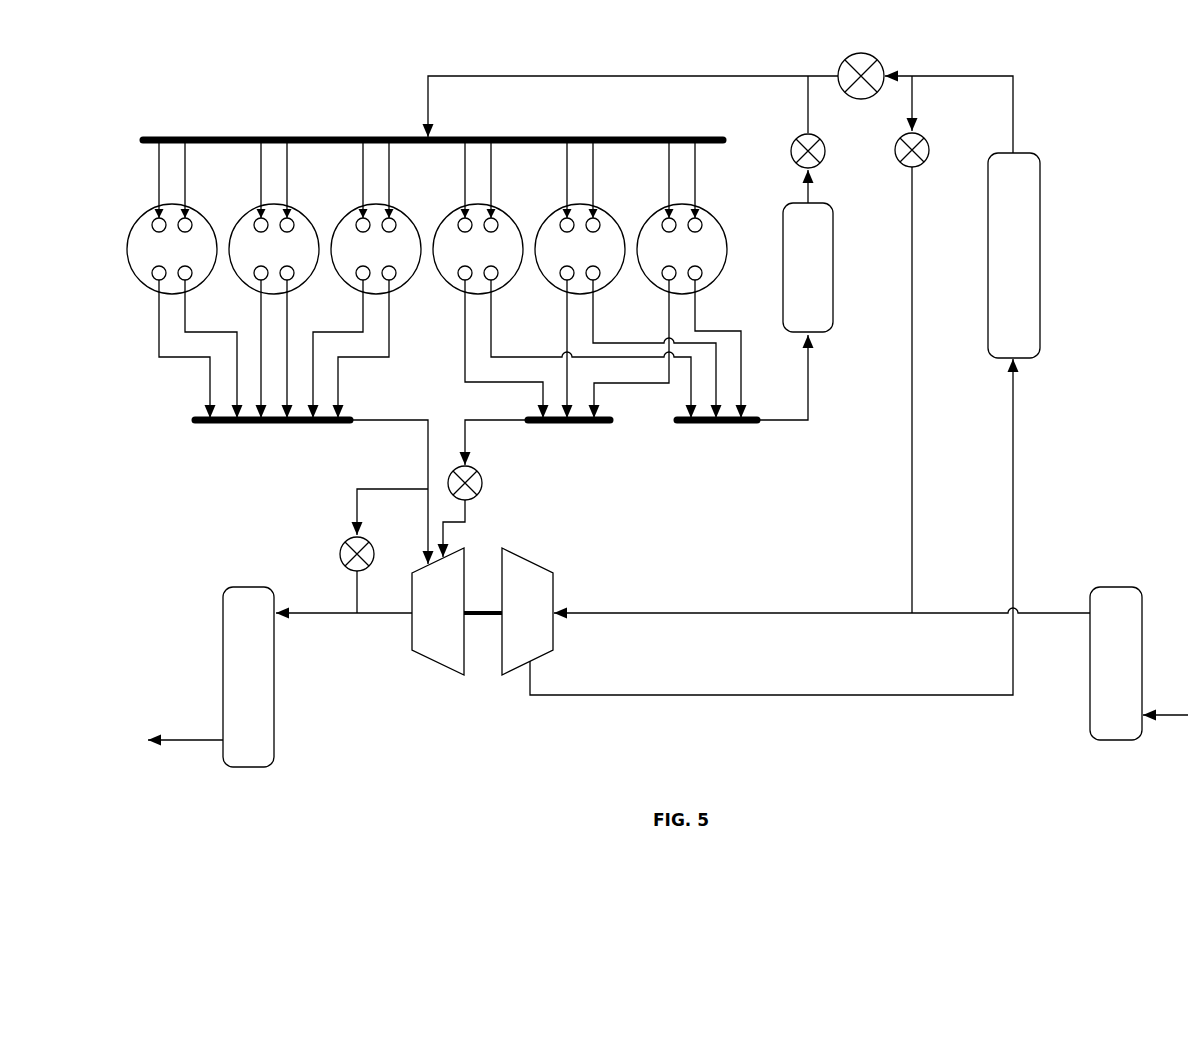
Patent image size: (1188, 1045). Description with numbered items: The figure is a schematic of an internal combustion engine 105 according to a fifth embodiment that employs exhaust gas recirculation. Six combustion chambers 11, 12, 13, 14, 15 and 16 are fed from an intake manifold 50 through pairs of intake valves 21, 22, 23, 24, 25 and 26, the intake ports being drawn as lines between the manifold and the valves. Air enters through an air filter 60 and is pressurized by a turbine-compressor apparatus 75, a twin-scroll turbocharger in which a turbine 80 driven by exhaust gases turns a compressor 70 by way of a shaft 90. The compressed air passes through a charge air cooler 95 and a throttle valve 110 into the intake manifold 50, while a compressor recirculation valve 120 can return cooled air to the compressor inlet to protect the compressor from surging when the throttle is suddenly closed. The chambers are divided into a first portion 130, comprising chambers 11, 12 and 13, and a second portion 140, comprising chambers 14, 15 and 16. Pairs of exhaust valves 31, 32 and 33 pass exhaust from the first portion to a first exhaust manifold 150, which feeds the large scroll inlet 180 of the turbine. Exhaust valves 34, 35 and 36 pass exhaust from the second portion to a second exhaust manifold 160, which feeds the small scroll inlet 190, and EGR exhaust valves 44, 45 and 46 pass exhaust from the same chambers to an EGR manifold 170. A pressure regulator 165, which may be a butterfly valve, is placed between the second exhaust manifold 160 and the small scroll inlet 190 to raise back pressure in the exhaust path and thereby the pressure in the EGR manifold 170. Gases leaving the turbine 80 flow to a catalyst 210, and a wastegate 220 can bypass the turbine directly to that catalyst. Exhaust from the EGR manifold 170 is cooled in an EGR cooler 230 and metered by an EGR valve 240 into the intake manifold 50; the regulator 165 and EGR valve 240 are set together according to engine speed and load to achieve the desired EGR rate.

The engine 105 is at (134, 112).
The intake manifold 50 is at (220, 136).
The combustion chamber 11 is at (162, 259).
The combustion chamber 12 is at (264, 259).
The combustion chamber 13 is at (366, 259).
The combustion chamber 14 is at (468, 259).
The combustion chamber 15 is at (570, 259).
The combustion chamber 16 is at (672, 259).
The intake valves 21 is at (180, 214).
The intake valves 22 is at (282, 214).
The intake valves 23 is at (384, 214).
The intake valves 24 is at (486, 214).
The intake valves 25 is at (588, 214).
The intake valves 26 is at (690, 214).
The exhaust valves 31 is at (164, 286).
The exhaust valves 32 is at (266, 286).
The exhaust valves 33 is at (368, 286).
The exhaust valve 34 is at (458, 279).
The EGR exhaust valve 44 is at (498, 279).
The exhaust valve 35 is at (560, 279).
The EGR exhaust valve 45 is at (600, 279).
The exhaust valve 36 is at (662, 279).
The EGR exhaust valve 46 is at (702, 279).
The first portion 130 is at (402, 356).
The second portion 140 is at (454, 332).
The first exhaust manifold 150 is at (228, 426).
The second exhaust manifold 160 is at (586, 426).
The EGR manifold 170 is at (706, 428).
The pressure regulator 165 is at (484, 483).
The large scroll inlet 180 is at (426, 560).
The small scroll inlet 190 is at (459, 562).
The wastegate 220 is at (339, 546).
The turbine 80 is at (428, 623).
The compressor 70 is at (517, 623).
The shaft 90 is at (490, 622).
The turbine-compressor apparatus 75 is at (455, 738).
The catalyst 210 is at (232, 687).
The air filter 60 is at (1106, 673).
The charge air cooler 95 is at (1004, 265).
The EGR cooler 230 is at (792, 278).
The throttle valve 110 is at (856, 97).
The compressor recirculation valve 120 is at (896, 158).
The EGR valve 240 is at (791, 151).